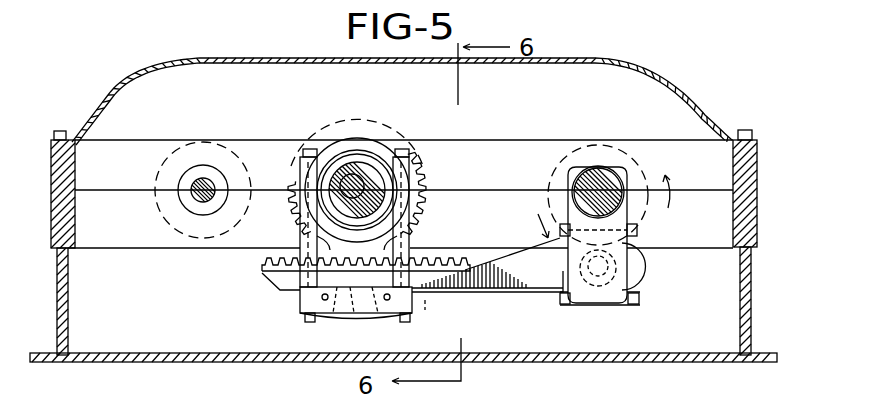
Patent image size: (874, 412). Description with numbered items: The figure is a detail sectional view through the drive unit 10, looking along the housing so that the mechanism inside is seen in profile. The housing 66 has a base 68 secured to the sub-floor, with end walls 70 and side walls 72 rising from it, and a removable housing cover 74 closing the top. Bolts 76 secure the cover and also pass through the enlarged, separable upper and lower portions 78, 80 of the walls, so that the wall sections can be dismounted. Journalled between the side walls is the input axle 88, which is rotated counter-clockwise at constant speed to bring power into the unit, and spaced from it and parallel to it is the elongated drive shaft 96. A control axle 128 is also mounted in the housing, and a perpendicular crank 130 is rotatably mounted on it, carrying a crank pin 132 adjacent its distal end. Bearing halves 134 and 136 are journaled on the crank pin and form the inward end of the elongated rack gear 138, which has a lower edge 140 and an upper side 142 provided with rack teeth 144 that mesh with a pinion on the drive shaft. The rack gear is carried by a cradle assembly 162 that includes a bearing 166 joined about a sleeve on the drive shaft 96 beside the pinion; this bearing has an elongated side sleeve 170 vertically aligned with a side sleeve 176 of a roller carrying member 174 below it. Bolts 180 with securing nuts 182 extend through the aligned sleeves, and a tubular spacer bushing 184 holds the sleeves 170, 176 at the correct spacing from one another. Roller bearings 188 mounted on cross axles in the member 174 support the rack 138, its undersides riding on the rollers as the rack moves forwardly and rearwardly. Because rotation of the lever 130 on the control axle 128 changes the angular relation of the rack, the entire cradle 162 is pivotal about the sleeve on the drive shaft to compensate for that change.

The drive unit 10 is at (657, 50).
The housing 66 is at (687, 80).
The base 68 is at (583, 364).
The end walls 70 is at (771, 303).
The side walls 72 is at (185, 328).
The housing cover 74 is at (600, 66).
The bolts 76 is at (752, 130).
The upper portion of wall 78 is at (757, 167).
The lower portion of wall 80 is at (757, 216).
The input axle 88 is at (205, 183).
The drive shaft 96 is at (365, 188).
The control axle 128 is at (590, 180).
The crank 130 is at (615, 276).
The crank pin 132 is at (613, 307).
The bearing half 134 is at (583, 305).
The bearing half 136 is at (630, 305).
The rack gear 138 is at (510, 296).
The lower edge 140 is at (462, 345).
The upper side 142 is at (480, 255).
The rack teeth 144 is at (426, 224).
The cradle assembly 162 is at (347, 318).
The bearing 166 is at (457, 108).
The sleeve 170 is at (405, 207).
The roller carrying member 174 is at (333, 320).
The side sleeve 176 is at (300, 299).
The bolts 180 is at (398, 150).
The securing nuts 182 is at (409, 318).
The tubular spacer bushings 184 is at (262, 256).
The roller bearings 188 is at (385, 325).